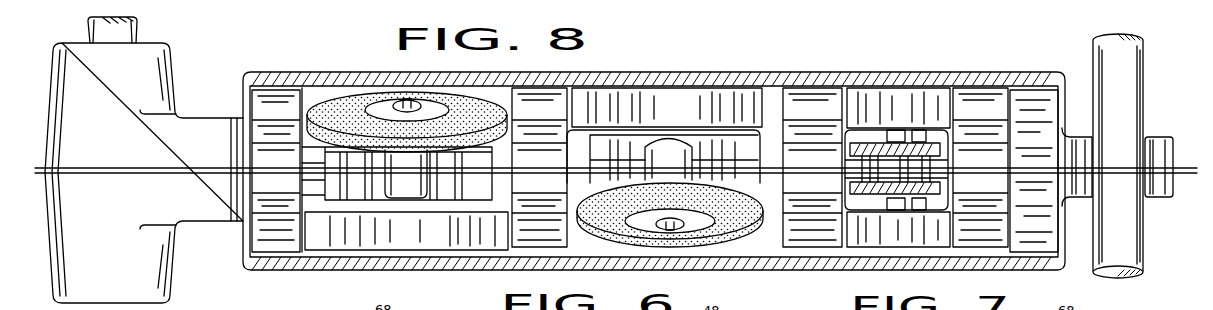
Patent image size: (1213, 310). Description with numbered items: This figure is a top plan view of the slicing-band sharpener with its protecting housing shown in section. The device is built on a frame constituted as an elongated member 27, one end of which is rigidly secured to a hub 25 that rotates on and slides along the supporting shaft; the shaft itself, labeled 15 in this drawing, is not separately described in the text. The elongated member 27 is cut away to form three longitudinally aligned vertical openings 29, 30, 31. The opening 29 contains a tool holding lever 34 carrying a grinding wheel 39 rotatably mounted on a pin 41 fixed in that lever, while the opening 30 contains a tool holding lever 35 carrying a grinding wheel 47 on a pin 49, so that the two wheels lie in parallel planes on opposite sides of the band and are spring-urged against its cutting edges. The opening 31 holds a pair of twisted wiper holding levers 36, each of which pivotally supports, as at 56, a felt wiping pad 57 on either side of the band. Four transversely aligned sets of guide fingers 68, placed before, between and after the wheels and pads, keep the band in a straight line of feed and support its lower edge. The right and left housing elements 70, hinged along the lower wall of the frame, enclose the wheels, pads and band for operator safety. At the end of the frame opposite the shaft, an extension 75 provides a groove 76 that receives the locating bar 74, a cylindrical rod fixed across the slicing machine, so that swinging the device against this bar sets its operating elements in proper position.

The shaft 15 is at (197, 168).
The hub 25 is at (165, 285).
The elongated member 27 is at (460, 235).
The vertical opening 29 is at (479, 183).
The vertical opening 30 is at (741, 142).
The vertical opening 31 is at (862, 162).
The tool holding lever 34 is at (417, 199).
The tool holding lever 35 is at (666, 150).
The wiper holding lever 36 is at (920, 130).
The grinding wheel 39 is at (333, 100).
The pin 41 is at (402, 104).
The grinding wheel 47 is at (750, 233).
The pin 49 is at (685, 230).
The pivotal support 56 is at (898, 130).
The wiping pad 57 is at (945, 148).
The guide fingers 68 is at (284, 194).
The housing element 70 is at (674, 72).
The locating bar 74 is at (1130, 247).
The extension 75 is at (1078, 145).
The groove 76 is at (1146, 136).